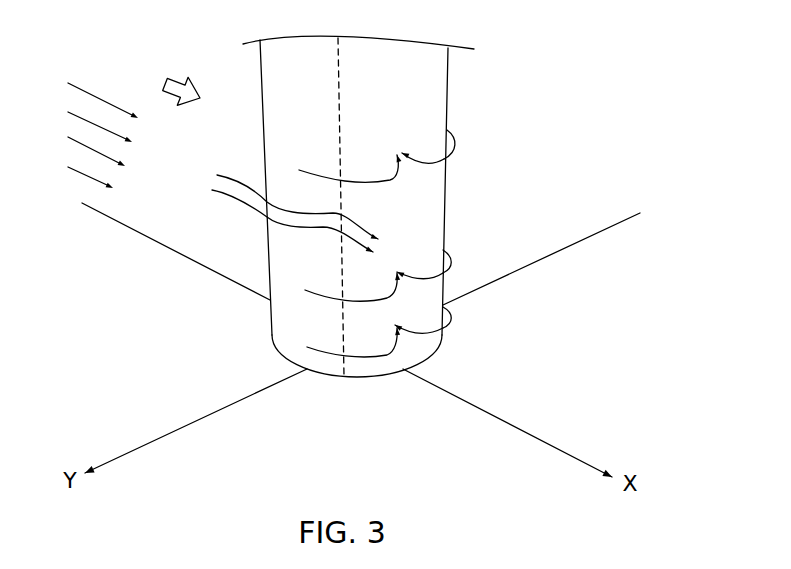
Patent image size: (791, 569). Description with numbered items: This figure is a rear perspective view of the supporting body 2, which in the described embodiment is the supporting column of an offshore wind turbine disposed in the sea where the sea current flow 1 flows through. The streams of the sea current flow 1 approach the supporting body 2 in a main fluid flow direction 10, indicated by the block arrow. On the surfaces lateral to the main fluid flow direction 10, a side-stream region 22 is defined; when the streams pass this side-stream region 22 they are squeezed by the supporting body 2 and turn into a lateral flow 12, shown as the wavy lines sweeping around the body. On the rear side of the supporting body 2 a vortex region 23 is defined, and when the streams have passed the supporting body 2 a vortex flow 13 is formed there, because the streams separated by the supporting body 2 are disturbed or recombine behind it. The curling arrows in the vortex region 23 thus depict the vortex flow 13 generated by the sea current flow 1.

The sea current flow 1 is at (90, 94).
The main fluid flow direction 10 is at (181, 81).
The supporting body 2 is at (270, 59).
The side-stream region 22 is at (270, 118).
The vortex region 23 is at (443, 91).
The lateral flow 12 is at (247, 208).
The vortex flow 13 is at (423, 335).